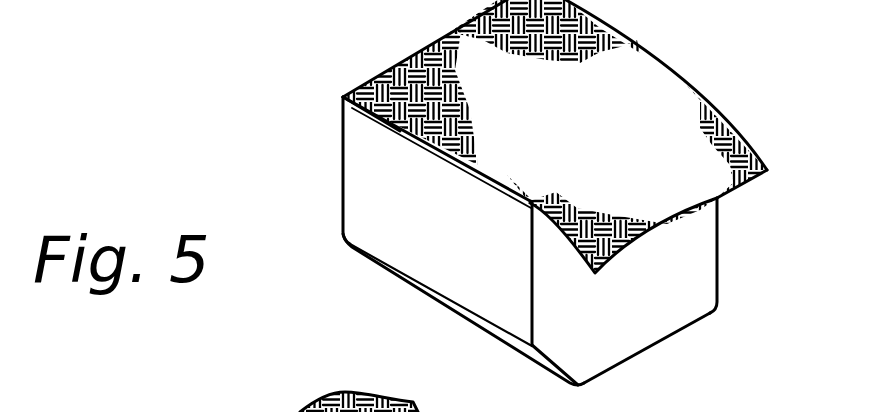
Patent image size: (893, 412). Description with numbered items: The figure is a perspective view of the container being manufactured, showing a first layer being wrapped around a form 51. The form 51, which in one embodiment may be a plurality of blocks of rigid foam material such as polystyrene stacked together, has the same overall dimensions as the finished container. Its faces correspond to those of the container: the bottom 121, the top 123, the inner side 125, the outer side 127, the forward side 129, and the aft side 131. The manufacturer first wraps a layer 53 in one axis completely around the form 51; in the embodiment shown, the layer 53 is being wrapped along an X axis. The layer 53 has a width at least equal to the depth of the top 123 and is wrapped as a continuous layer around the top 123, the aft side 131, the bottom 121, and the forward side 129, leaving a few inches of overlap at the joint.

The form 51 is at (357, 227).
The layer 53 is at (740, 122).
The bottom 121 is at (613, 373).
The top 123 is at (343, 97).
The inner side 125 is at (717, 225).
The outer side 127 is at (408, 259).
The forward side 129 is at (343, 152).
The aft side 131 is at (688, 292).